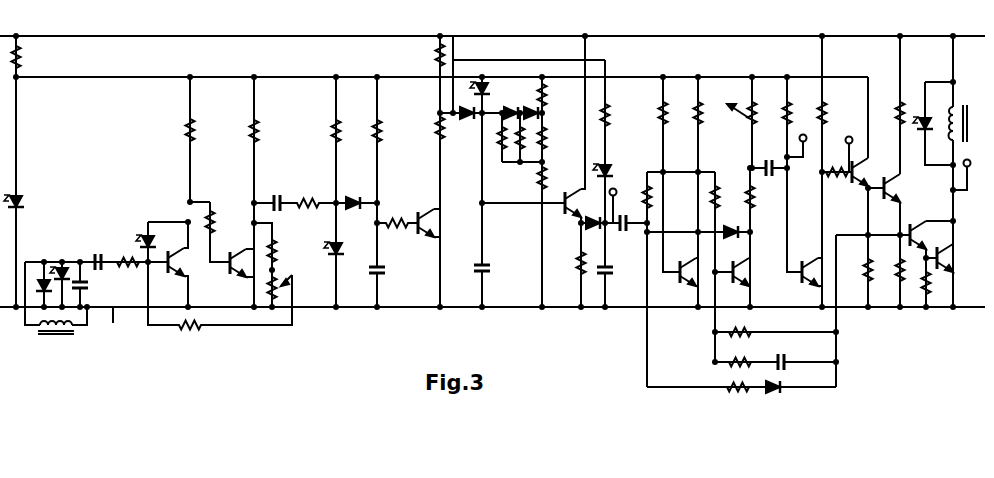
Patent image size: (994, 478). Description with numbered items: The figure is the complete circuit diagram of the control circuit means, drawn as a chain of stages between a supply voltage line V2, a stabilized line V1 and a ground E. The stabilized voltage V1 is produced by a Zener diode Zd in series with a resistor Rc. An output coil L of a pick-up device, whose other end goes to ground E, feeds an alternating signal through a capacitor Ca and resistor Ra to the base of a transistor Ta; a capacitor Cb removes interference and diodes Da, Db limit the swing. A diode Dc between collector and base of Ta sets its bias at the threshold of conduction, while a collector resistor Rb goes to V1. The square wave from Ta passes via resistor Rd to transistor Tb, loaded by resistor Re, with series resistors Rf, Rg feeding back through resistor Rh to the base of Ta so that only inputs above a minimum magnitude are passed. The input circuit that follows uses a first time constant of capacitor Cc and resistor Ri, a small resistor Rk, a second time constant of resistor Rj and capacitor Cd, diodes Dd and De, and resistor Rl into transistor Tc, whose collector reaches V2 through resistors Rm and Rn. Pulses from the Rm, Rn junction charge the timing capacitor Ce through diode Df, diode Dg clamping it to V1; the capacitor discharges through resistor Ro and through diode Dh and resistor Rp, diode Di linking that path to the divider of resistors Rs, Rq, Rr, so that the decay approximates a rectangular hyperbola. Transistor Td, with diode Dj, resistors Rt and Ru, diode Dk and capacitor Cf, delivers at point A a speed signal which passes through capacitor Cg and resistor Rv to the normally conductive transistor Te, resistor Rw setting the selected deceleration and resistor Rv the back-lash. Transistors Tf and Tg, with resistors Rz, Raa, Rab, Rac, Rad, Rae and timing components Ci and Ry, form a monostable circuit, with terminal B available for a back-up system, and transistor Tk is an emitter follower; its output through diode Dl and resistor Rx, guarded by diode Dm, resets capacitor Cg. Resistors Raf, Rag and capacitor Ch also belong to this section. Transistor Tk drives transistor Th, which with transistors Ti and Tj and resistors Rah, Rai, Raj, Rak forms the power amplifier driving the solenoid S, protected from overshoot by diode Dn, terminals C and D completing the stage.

The stabilized positive voltage line V1 is at (150, 77).
The supply voltage line V2 is at (188, 36).
The resistor Rc is at (33, 56).
The Zener diode Zd is at (29, 204).
The diode Da is at (42, 278).
The diode Db is at (65, 267).
The capacitor Cb is at (95, 284).
The capacitor Ca is at (100, 249).
The resistor Ra is at (129, 247).
The output coil L is at (70, 333).
The ground E is at (114, 326).
The transistor Ta is at (176, 264).
The diode Dc is at (162, 242).
The resistor Rh is at (220, 311).
The collector resistor Rb is at (205, 139).
The resistor Rd is at (226, 232).
The transistor Tb is at (236, 275).
The resistor Re is at (262, 128).
The capacitor Cc is at (274, 191).
The resistor Rk is at (314, 189).
The diode De is at (356, 190).
The resistor Rf is at (279, 266).
The resistor Rg is at (297, 288).
The resistor Ri is at (323, 192).
The diode Dd is at (348, 243).
The resistor Rj is at (389, 192).
The capacitor Cd is at (392, 273).
The resistor Rl is at (397, 213).
The transistor Tc is at (438, 223).
The resistor Rm is at (438, 52).
The resistor Rn is at (427, 211).
The diode Df is at (459, 124).
The diode Dg is at (480, 75).
The diode Dh is at (508, 106).
The diode Di is at (549, 115).
The resistor Rs is at (558, 93).
The resistor Ro is at (497, 134).
The resistor Rp is at (510, 157).
The resistor Rq is at (559, 139).
The resistor Rr is at (556, 236).
The timing capacitance Ce is at (519, 211).
The transistor Td is at (569, 171).
The resistor Ru is at (569, 266).
The diode Dj is at (591, 211).
The capacitor Cg is at (626, 212).
The speed signal point A is at (620, 195).
The resistor Rt is at (619, 185).
The diode Dk is at (614, 157).
The capacitor Cf is at (614, 285).
The resistor Rv is at (670, 273).
The resistor Rw is at (679, 173).
The resistor Rz is at (711, 192).
The transistor Te is at (698, 273).
The resistor Raa is at (710, 204).
The diode Dm is at (738, 236).
The resistor Rac is at (754, 210).
The transistor Tf is at (750, 272).
The resistor Rab is at (728, 122).
The capacitor Ci is at (770, 176).
The resistor Ry is at (783, 104).
The terminal B is at (799, 135).
The transistor Tg is at (824, 272).
The resistor Rae is at (842, 171).
The resistor Rad is at (840, 180).
The terminal C is at (847, 142).
The transistor Tk is at (875, 157).
The transistor Th is at (897, 205).
The resistor Rai is at (898, 100).
The resistor Rak is at (870, 295).
The resistor Rah is at (896, 258).
The transistor Ti is at (933, 239).
The resistor Raj is at (928, 298).
The transistor Tj is at (954, 260).
The diode Dn is at (921, 118).
The solenoid S is at (975, 104).
The terminal D is at (968, 164).
The resistor Raf is at (726, 328).
The resistor Rag is at (726, 358).
The capacitor Ch is at (790, 348).
The resistor Rx is at (741, 402).
The diode Dl is at (768, 390).